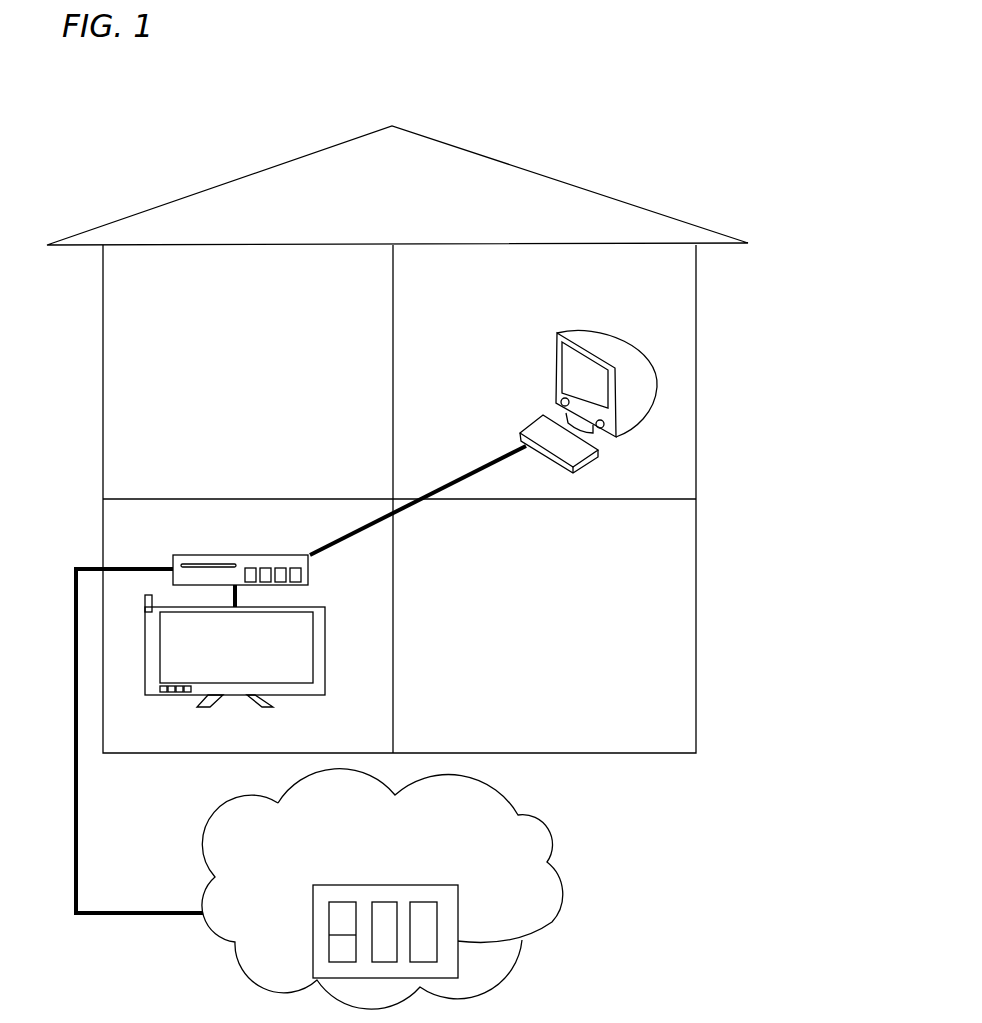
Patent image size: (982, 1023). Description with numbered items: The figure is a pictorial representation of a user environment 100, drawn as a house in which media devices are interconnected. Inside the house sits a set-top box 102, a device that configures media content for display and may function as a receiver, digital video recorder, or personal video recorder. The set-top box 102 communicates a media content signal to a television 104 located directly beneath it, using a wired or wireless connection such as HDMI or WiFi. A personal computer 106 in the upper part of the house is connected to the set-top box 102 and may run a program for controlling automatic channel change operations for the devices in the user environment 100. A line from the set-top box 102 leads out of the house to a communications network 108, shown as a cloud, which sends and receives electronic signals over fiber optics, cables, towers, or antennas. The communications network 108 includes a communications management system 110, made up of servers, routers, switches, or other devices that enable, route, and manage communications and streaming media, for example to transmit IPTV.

The user environment 100 is at (207, 152).
The set-top box 102 is at (199, 555).
The television 104 is at (248, 651).
The personal computer 106 is at (572, 333).
The communications network 108 is at (382, 889).
The communications management system 110 is at (552, 922).